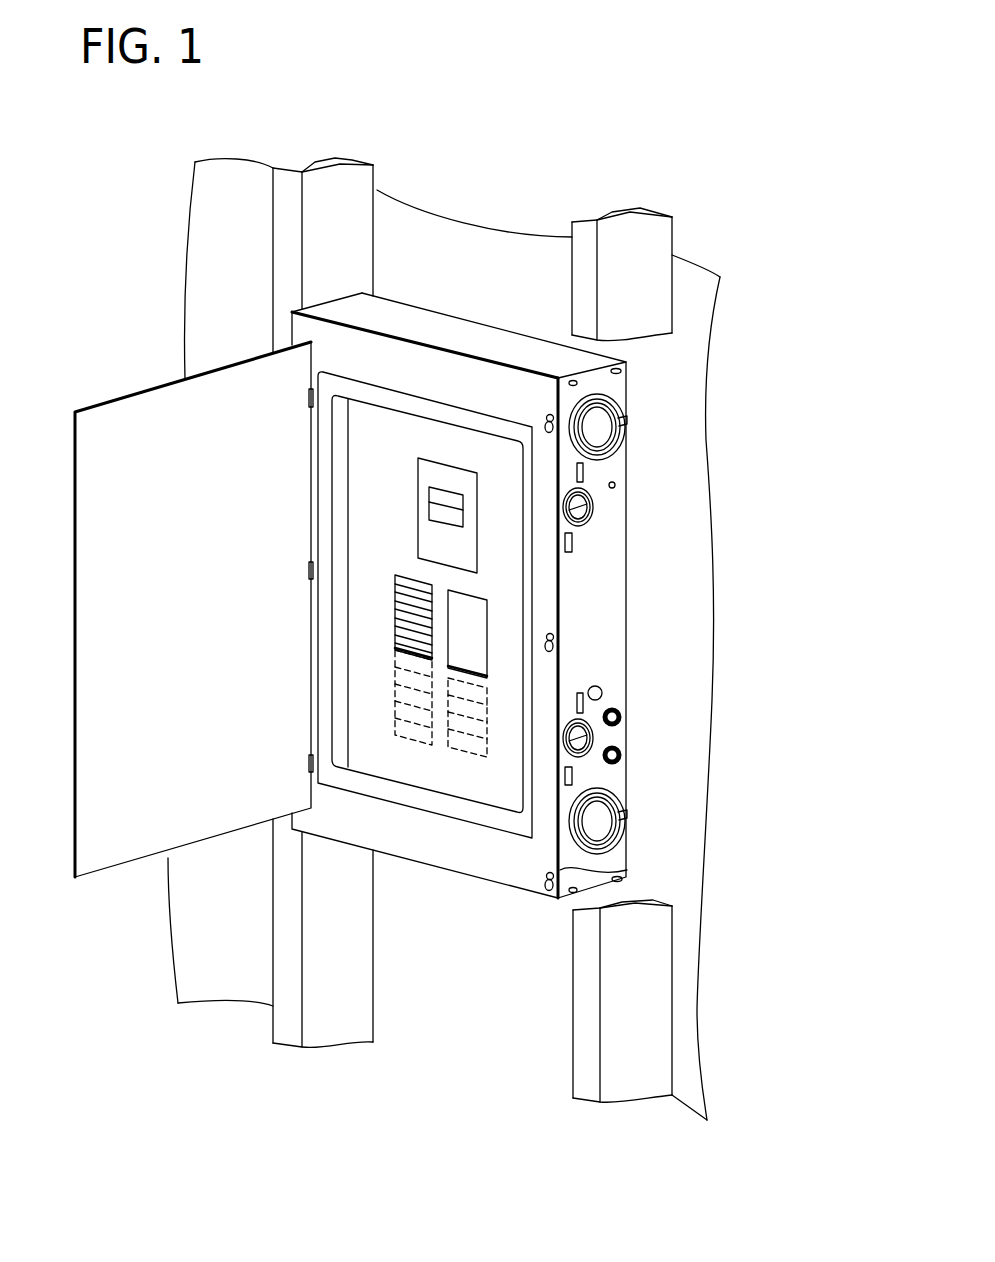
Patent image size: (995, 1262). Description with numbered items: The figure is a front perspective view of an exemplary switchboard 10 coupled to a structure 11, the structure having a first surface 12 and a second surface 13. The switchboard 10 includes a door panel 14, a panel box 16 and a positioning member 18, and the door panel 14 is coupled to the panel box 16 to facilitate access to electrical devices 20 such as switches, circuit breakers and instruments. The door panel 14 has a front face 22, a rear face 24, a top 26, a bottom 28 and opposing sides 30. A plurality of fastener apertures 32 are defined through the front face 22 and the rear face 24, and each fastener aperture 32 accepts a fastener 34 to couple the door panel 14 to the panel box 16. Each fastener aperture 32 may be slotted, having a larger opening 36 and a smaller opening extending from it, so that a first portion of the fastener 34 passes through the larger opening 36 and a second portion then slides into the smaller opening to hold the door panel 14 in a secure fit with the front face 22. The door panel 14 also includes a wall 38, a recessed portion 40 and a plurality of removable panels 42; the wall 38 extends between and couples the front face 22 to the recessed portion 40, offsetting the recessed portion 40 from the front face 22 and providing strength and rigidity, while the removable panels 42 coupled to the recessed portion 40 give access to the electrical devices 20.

The switchboard 10 is at (640, 450).
The structure 11 is at (292, 202).
The first surface 12 is at (355, 205).
The second surface 13 is at (583, 245).
The door panel 14 is at (447, 372).
The panel box 16 is at (612, 616).
The positioning member 18 is at (580, 697).
The electrical devices 20 is at (438, 498).
The front face 22 is at (330, 343).
The rear face 24 is at (360, 346).
The top 26 is at (507, 368).
The bottom 28 is at (413, 855).
The opposing sides 30 is at (560, 578).
The fastener apertures 32 is at (556, 886).
The fastener 34 is at (627, 870).
The larger opening 36 is at (546, 884).
The wall 38 is at (340, 630).
The recessed portion 40 is at (381, 550).
The removable panels 42 is at (400, 712).